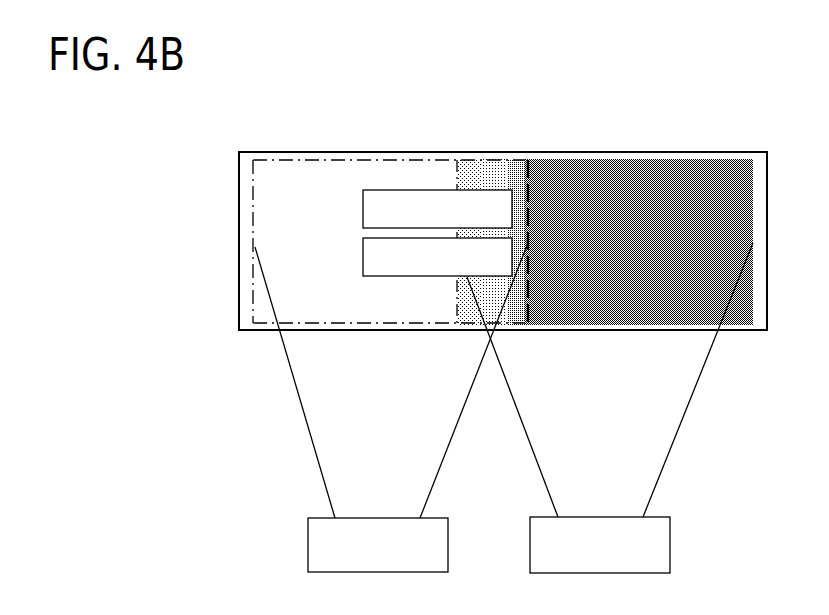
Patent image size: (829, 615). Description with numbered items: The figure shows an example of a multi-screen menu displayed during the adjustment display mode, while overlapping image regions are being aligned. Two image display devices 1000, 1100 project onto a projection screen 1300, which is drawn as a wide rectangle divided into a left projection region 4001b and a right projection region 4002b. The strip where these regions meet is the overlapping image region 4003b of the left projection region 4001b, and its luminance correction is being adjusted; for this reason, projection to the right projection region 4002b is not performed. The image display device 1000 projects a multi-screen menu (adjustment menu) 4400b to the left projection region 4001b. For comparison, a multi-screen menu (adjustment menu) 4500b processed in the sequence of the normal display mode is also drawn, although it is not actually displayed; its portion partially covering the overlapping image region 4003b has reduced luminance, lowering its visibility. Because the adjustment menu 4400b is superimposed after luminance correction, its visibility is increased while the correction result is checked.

The projection screen 1300 is at (239, 247).
The left projection region 4001b is at (282, 177).
The overlapping image region 4003b is at (498, 165).
The right projection region 4002b is at (642, 170).
The multi-screen menu (adjustment menu) 4500b is at (363, 210).
The multi-screen menu (adjustment menu) 4400b is at (363, 258).
The image display device 1000 is at (308, 545).
The image display device 1100 is at (670, 548).